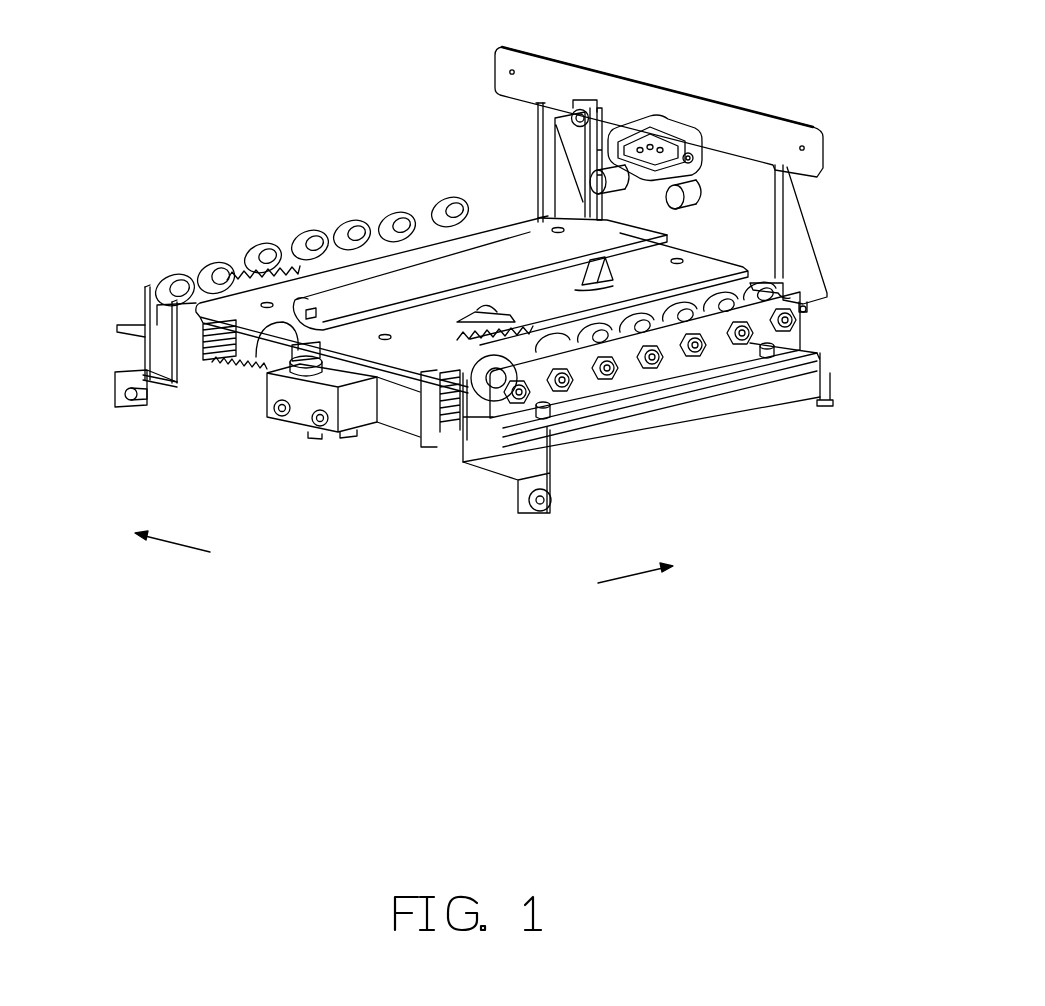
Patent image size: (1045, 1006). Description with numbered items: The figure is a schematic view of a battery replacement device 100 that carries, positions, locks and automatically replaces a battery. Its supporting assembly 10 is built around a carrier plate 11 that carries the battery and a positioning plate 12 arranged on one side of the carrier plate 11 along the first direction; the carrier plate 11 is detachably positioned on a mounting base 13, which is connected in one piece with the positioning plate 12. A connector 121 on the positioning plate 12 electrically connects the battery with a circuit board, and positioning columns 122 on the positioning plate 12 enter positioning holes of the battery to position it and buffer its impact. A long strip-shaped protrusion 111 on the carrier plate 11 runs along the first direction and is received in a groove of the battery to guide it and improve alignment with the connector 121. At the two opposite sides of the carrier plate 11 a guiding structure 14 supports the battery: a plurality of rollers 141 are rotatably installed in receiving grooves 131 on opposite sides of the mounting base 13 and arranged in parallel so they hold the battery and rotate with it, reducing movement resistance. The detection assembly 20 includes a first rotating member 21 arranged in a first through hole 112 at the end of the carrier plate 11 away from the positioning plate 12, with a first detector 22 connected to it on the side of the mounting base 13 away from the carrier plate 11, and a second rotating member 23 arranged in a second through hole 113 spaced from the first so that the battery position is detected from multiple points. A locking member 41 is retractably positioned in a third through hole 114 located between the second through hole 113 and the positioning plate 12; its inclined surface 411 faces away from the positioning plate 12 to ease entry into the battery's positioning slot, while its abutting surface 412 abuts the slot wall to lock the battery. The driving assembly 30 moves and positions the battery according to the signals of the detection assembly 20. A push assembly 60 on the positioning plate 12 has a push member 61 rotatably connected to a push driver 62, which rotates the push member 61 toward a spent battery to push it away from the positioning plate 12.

The battery replacement device 100 is at (412, 36).
The supporting assembly 10 is at (522, 347).
The carrier plate 11 is at (672, 273).
The positioning plate 12 is at (763, 250).
The mounting base 13 is at (673, 302).
The guiding structure 14 is at (880, 262).
The rollers 141 is at (282, 243).
The detection assembly 20 is at (420, 417).
The first rotating member 21 is at (277, 327).
The first detector 22 is at (307, 410).
The second rotating member 23 is at (522, 331).
The driving assembly 30 is at (122, 340).
The locking member 41 is at (771, 224).
The inclined surface 411 is at (609, 255).
The abutting surface 412 is at (620, 267).
The push assembly 60 is at (522, 160).
The push member 61 is at (580, 140).
The push driver 62 is at (590, 200).
The protrusion 111 is at (447, 282).
The first through hole 112 is at (217, 370).
The second through hole 113 is at (468, 322).
The third through hole 114 is at (580, 277).
The connector 121 is at (650, 137).
The positioning columns 122 is at (693, 185).
The receiving grooves 131 is at (147, 343).